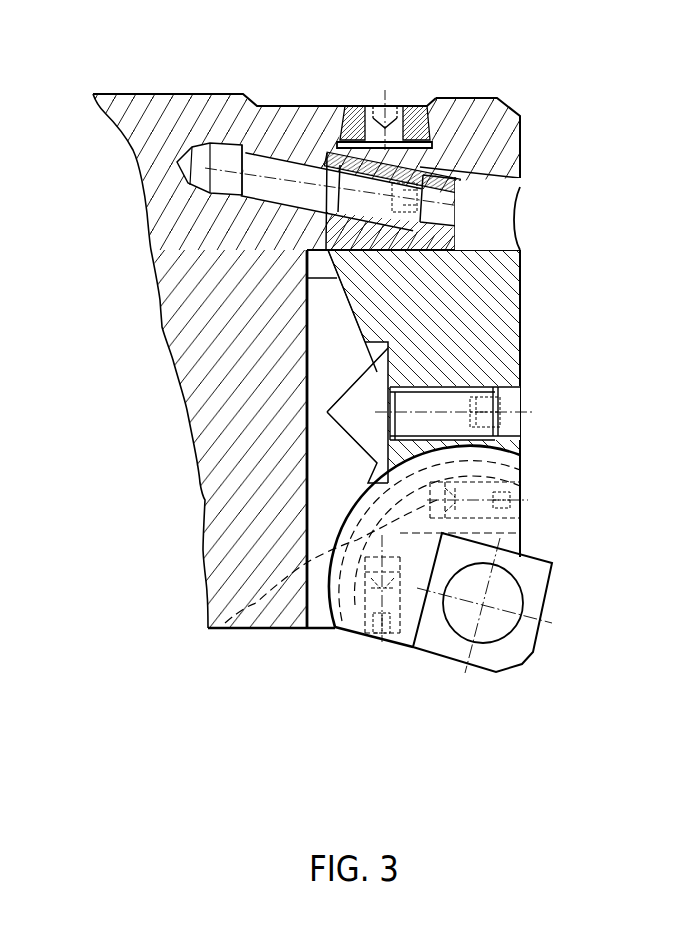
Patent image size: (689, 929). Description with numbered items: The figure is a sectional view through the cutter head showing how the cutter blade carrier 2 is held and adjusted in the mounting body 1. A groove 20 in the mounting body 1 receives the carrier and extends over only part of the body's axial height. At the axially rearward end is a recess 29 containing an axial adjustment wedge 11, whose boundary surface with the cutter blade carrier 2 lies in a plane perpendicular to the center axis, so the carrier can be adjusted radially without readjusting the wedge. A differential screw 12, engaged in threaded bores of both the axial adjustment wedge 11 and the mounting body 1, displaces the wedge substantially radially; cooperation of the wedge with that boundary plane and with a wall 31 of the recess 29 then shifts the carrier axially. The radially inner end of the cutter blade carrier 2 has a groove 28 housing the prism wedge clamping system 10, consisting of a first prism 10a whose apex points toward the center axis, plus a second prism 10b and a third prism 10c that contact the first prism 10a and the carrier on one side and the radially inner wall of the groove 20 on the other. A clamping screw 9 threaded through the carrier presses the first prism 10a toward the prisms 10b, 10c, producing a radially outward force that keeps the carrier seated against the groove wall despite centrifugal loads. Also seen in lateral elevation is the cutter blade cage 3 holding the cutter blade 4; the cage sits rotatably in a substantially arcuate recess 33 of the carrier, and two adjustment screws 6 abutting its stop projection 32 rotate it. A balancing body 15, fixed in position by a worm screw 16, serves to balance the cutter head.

The mounting body 1 is at (167, 122).
The cutter blade carrier 2 is at (503, 273).
The cutter blade cage 3 is at (413, 603).
The cutter blade 4 is at (512, 652).
The adjustment screws 6 is at (513, 475).
The clamping screw 9 is at (445, 403).
The prism wedge clamping system 10 is at (50, 325).
The first prism 10a is at (363, 408).
The second prism 10b is at (342, 332).
The third prism 10c is at (343, 480).
The axial adjustment wedge 11 is at (345, 228).
The differential screw 12 is at (178, 163).
The balancing body 15 is at (422, 138).
The worm screw 16 is at (366, 106).
The groove 20 is at (312, 506).
The groove 28 is at (326, 268).
The recess 29 is at (490, 200).
The wall 31 is at (473, 170).
The stop projection 32 is at (523, 533).
The arcuate recess 33 is at (225, 623).